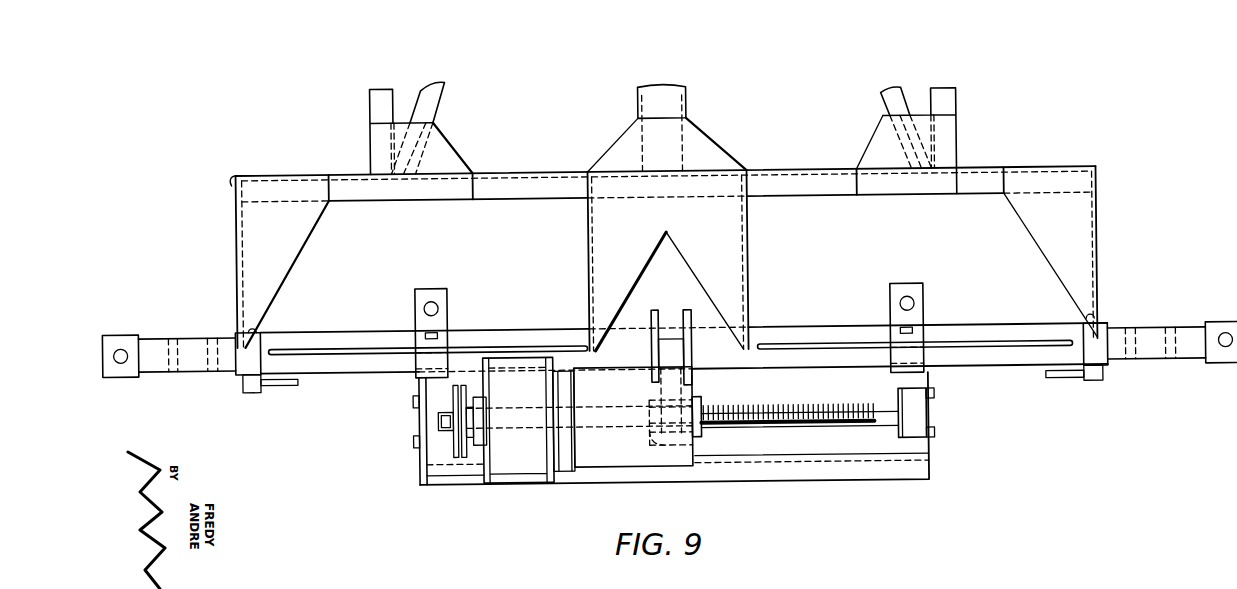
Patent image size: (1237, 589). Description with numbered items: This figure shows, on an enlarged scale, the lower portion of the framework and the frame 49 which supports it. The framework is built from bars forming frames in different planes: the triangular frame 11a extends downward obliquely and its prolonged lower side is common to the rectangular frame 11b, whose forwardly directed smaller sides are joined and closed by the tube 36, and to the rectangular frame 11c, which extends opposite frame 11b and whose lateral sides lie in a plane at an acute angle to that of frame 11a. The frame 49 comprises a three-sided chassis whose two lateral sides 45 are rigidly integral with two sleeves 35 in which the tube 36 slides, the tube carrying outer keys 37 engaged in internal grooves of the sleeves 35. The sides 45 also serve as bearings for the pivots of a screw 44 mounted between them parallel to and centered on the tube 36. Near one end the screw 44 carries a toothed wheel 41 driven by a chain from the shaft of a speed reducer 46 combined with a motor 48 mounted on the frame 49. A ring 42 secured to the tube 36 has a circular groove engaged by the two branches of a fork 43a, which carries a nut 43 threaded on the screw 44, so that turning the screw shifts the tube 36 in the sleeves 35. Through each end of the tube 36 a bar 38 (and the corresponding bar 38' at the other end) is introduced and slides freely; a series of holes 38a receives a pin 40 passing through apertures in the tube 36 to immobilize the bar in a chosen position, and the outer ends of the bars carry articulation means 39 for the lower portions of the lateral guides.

The triangular frame 11a is at (438, 130).
The rectangular frame 11b is at (245, 195).
The rectangular frame 11c is at (386, 91).
The sleeve 35 is at (422, 292).
The tube 36 is at (315, 334).
The outer key 37 is at (333, 358).
The bar 38 is at (1156, 362).
The extension shaft 38' is at (169, 375).
The holes 38a is at (1140, 339).
The articulation means 39 is at (1208, 372).
The pin 40 is at (250, 389).
The toothed wheel 41 is at (458, 455).
The ring 42 is at (661, 310).
The nut 43 is at (697, 441).
The fork 43a is at (677, 358).
The screw 44 is at (782, 416).
The lateral side 45 is at (420, 446).
The speed reducer 46 is at (580, 420).
The motor 48 is at (592, 455).
The frame 49 is at (461, 472).